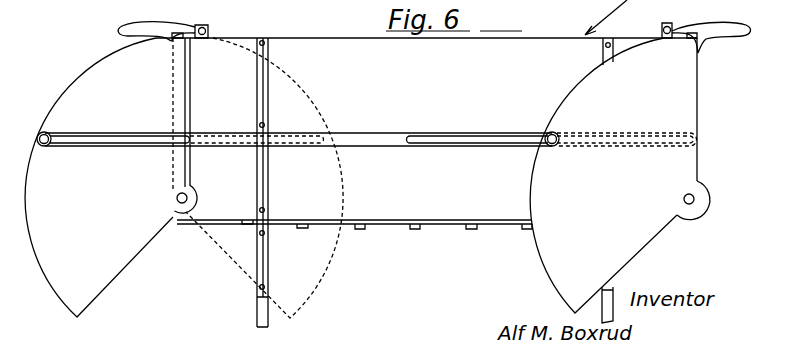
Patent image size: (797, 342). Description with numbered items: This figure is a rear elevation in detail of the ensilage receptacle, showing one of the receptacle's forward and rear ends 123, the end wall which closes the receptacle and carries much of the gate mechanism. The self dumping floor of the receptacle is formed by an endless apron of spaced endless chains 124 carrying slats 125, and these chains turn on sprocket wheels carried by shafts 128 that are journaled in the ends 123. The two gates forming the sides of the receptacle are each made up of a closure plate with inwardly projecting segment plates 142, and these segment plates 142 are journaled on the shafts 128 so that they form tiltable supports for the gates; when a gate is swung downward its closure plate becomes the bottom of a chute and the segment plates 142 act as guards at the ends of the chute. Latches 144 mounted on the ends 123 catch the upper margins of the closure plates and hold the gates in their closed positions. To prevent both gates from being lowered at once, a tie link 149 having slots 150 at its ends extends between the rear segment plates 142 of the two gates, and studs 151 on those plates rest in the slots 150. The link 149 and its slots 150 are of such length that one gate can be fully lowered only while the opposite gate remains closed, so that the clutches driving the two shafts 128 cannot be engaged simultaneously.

The forward and rear ends 123 is at (382, 70).
The endless chains 124 is at (447, 226).
The slats 125 is at (412, 230).
The shafts 128 is at (177, 199).
The segment plates 142 is at (122, 293).
The latches 144 is at (163, 32).
The tie link 149 is at (347, 140).
The slots 150 is at (118, 140).
The studs 151 is at (45, 133).